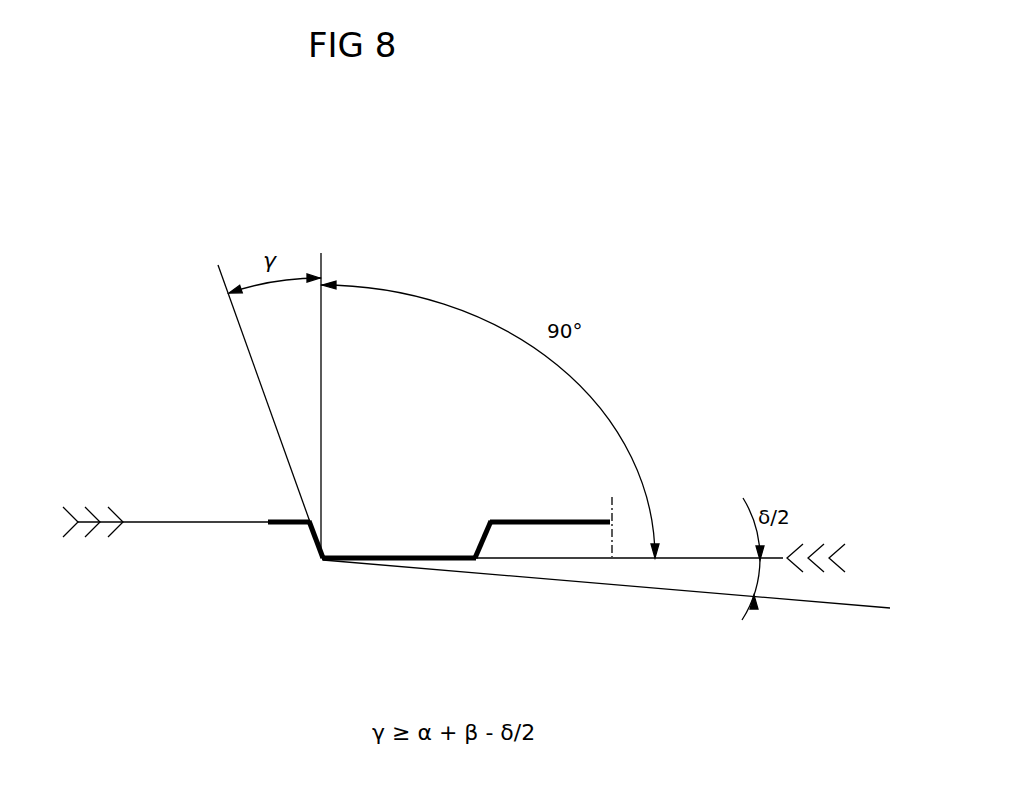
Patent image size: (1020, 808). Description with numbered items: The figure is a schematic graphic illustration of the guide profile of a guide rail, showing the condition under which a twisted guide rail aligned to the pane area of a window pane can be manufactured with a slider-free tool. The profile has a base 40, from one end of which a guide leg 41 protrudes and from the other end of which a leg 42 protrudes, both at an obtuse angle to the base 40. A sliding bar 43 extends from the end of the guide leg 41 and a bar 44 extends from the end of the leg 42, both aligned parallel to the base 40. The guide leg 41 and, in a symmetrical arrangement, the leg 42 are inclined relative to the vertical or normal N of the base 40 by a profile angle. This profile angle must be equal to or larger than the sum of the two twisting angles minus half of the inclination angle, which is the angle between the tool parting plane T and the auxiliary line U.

The base 40 is at (403, 561).
The guide leg 41 is at (318, 551).
The leg 42 is at (484, 543).
The sliding bar 43 is at (273, 520).
The bar 44 is at (532, 520).
The normal N is at (323, 264).
The tool parting plane T is at (705, 557).
The auxiliary line U is at (803, 601).